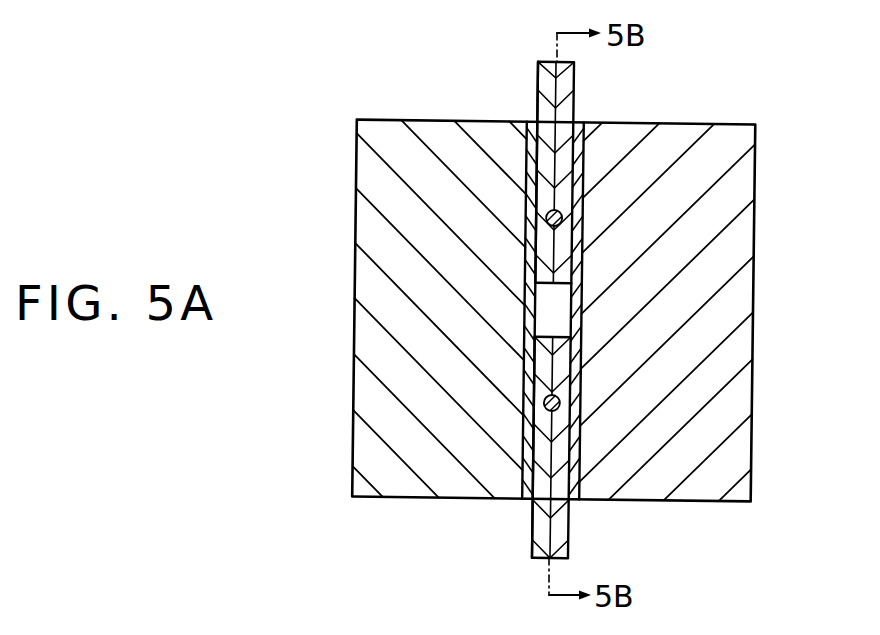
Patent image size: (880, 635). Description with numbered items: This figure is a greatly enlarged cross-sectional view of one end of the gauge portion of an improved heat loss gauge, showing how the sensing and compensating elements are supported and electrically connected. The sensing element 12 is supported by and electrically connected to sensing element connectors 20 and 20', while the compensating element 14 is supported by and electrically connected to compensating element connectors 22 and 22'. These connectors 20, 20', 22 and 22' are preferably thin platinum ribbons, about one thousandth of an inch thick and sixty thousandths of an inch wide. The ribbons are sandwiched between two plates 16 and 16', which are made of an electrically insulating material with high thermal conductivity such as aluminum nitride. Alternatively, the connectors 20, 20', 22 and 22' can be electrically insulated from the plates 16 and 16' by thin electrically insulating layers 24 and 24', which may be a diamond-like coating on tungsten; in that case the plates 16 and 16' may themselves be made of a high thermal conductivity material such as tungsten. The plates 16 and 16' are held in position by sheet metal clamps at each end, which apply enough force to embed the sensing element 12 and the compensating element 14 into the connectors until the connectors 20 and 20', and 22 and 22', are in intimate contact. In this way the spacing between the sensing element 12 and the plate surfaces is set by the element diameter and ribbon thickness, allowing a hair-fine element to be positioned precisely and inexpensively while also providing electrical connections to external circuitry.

The sensing element 12 is at (561, 212).
The compensating element 14 is at (544, 406).
The plate 16 is at (553, 336).
The plate 16' is at (439, 333).
The sensing element connector 20 is at (588, 172).
The sensing element connector 20' is at (500, 172).
The compensating element connector 22 is at (591, 423).
The compensating element connector 22' is at (496, 464).
The thin electrically insulating layer 24 is at (610, 329).
The thin electrically insulating layer 24' is at (493, 342).